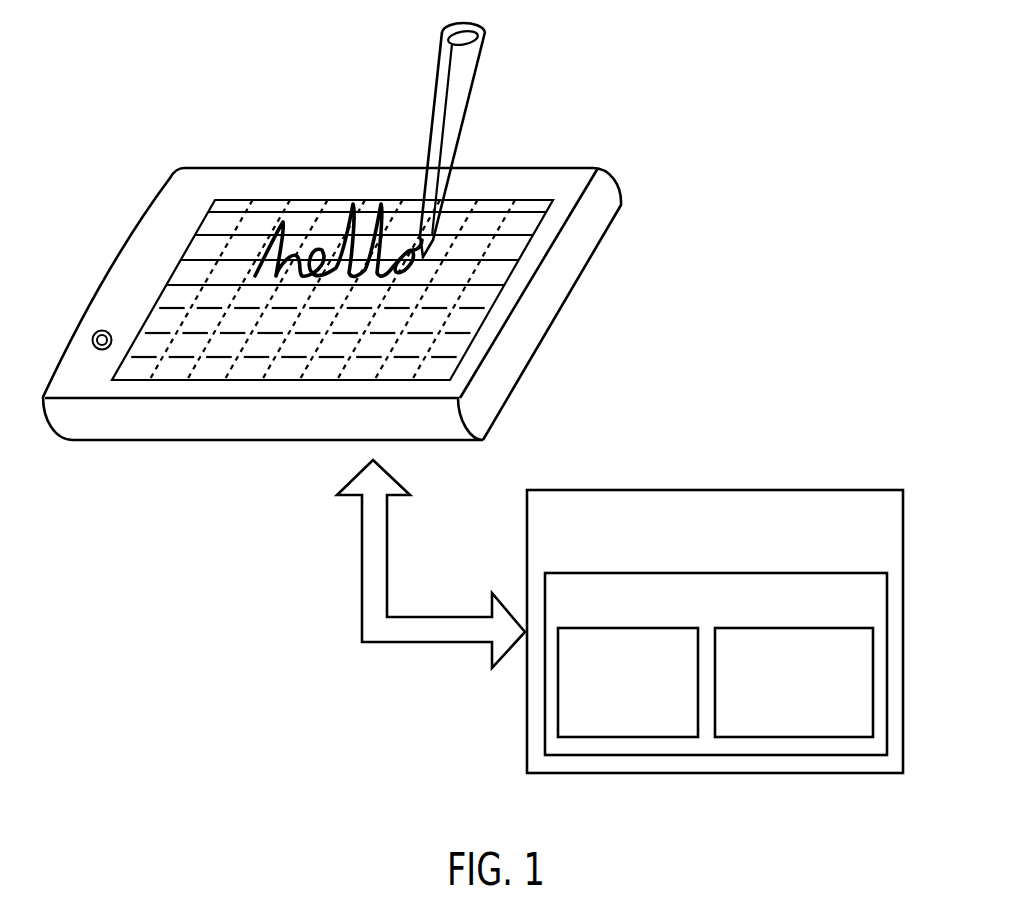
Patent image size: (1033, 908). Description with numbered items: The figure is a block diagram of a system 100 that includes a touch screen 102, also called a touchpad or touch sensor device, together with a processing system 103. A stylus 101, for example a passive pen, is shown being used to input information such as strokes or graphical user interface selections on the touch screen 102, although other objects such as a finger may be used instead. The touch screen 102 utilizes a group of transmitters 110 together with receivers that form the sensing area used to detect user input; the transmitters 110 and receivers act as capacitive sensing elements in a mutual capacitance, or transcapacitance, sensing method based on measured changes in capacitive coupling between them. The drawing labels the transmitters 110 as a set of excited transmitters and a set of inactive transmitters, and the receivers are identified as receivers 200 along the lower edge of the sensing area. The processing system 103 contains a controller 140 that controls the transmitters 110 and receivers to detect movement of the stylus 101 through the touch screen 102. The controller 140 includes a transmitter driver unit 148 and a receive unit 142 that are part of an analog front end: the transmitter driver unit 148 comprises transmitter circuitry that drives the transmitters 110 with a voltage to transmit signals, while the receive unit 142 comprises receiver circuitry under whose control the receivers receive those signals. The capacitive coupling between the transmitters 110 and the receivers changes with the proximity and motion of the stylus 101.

The system 100 is at (155, 66).
The stylus 101 is at (478, 78).
The touch screen 102 is at (152, 228).
The transmitters 110 is at (555, 206).
The receivers 200 is at (452, 386).
The processing system 103 is at (733, 560).
The controller 140 is at (785, 614).
The transmitter driver unit 148 is at (647, 726).
The receive unit 142 is at (811, 714).